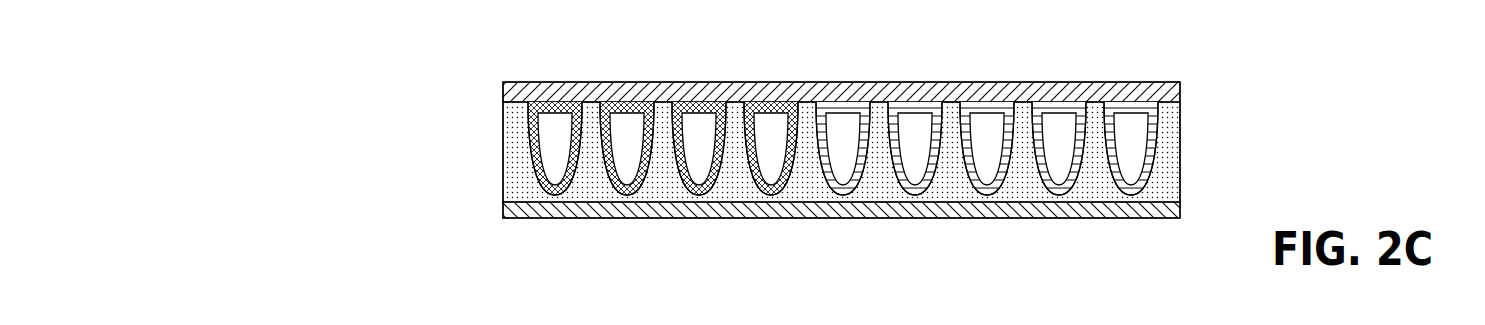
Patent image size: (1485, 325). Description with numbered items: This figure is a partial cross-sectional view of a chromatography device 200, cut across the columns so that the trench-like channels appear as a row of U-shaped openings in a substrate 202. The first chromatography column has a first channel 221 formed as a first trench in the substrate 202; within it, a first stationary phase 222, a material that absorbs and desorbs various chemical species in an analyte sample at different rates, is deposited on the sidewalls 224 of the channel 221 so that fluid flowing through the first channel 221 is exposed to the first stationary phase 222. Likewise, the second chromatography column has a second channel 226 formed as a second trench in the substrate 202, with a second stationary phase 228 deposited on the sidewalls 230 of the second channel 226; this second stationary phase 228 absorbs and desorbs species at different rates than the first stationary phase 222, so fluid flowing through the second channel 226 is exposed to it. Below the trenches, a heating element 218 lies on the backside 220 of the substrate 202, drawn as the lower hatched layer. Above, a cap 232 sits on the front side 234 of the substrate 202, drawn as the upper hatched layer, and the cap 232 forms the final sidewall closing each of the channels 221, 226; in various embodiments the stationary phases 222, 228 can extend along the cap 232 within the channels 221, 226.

The chromatography device 200 is at (786, 28).
The substrate 202 is at (1181, 152).
The heating element 218 is at (1181, 207).
The backside 220 is at (509, 216).
The first channel 221 is at (698, 172).
The first stationary phase 222 is at (717, 150).
The sidewalls 224 is at (708, 112).
The second channel 226 is at (986, 172).
The second stationary phase 228 is at (1007, 172).
The sidewalls 230 is at (995, 114).
The cap 232 is at (1181, 95).
The front side 234 is at (517, 85).